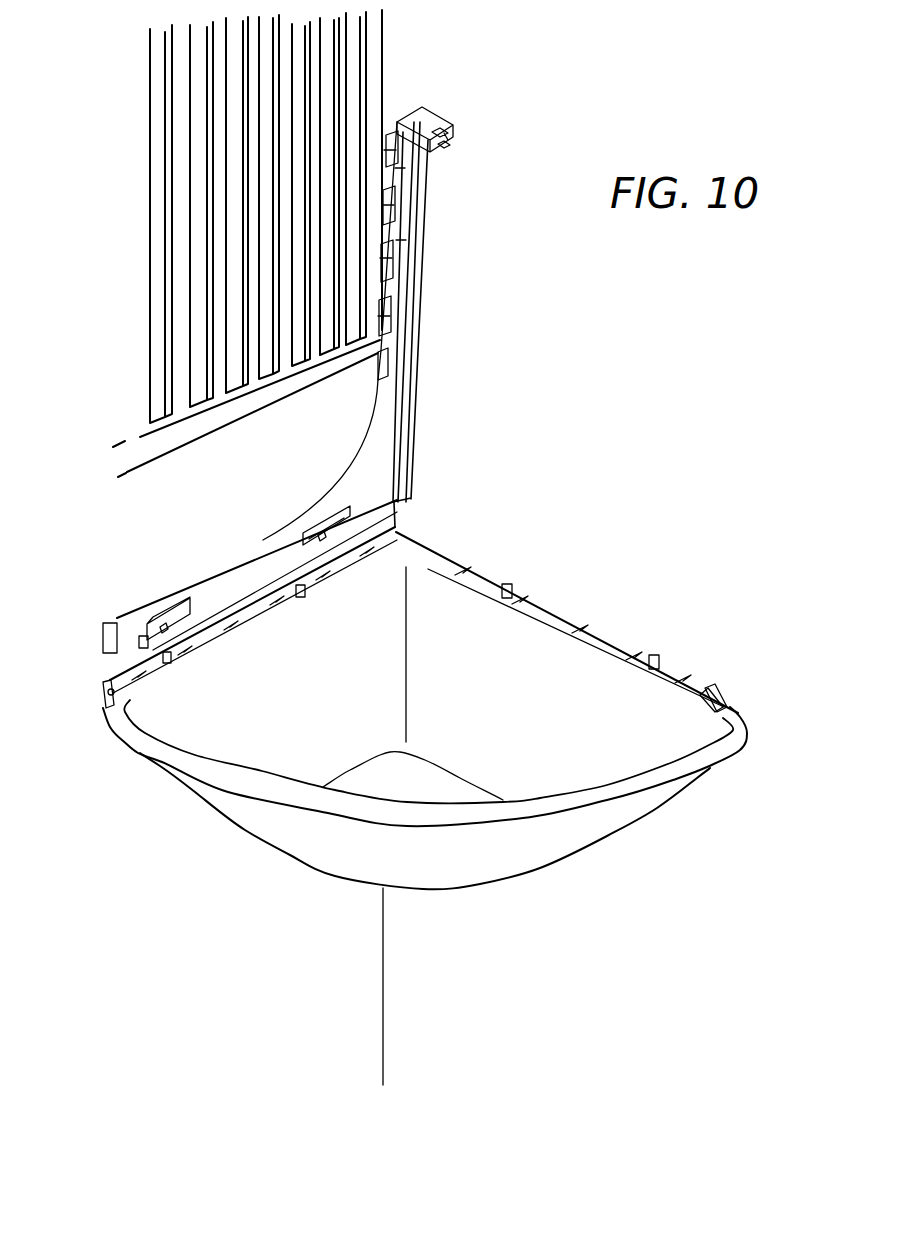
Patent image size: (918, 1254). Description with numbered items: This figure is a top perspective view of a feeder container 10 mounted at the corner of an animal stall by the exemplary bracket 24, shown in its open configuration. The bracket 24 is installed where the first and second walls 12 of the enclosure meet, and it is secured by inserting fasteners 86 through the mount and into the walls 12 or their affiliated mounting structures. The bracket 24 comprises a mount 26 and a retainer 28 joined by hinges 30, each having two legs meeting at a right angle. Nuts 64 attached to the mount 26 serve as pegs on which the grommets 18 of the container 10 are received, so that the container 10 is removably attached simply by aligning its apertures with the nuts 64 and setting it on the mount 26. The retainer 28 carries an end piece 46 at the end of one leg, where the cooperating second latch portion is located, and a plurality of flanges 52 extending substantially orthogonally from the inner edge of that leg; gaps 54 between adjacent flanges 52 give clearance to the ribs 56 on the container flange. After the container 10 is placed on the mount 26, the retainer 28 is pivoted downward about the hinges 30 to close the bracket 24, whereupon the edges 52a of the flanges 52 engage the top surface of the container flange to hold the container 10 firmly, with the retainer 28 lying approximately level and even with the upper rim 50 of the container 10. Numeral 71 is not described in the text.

The container 10 is at (472, 694).
The walls 12 is at (607, 422).
The grommets 18 is at (217, 600).
The bracket 24 is at (370, 484).
The mount 26 is at (101, 685).
The retainer 28 is at (384, 458).
The hinges 30 is at (145, 615).
The end piece 46 is at (437, 124).
The upper rim 50 is at (187, 612).
The flanges 52 is at (396, 207).
The edges 52a is at (396, 228).
The gaps 54 is at (398, 168).
The ribs 56 is at (585, 620).
The nut 64 is at (205, 625).
The channel rail 71 is at (230, 593).
The fasteners 86 is at (110, 705).